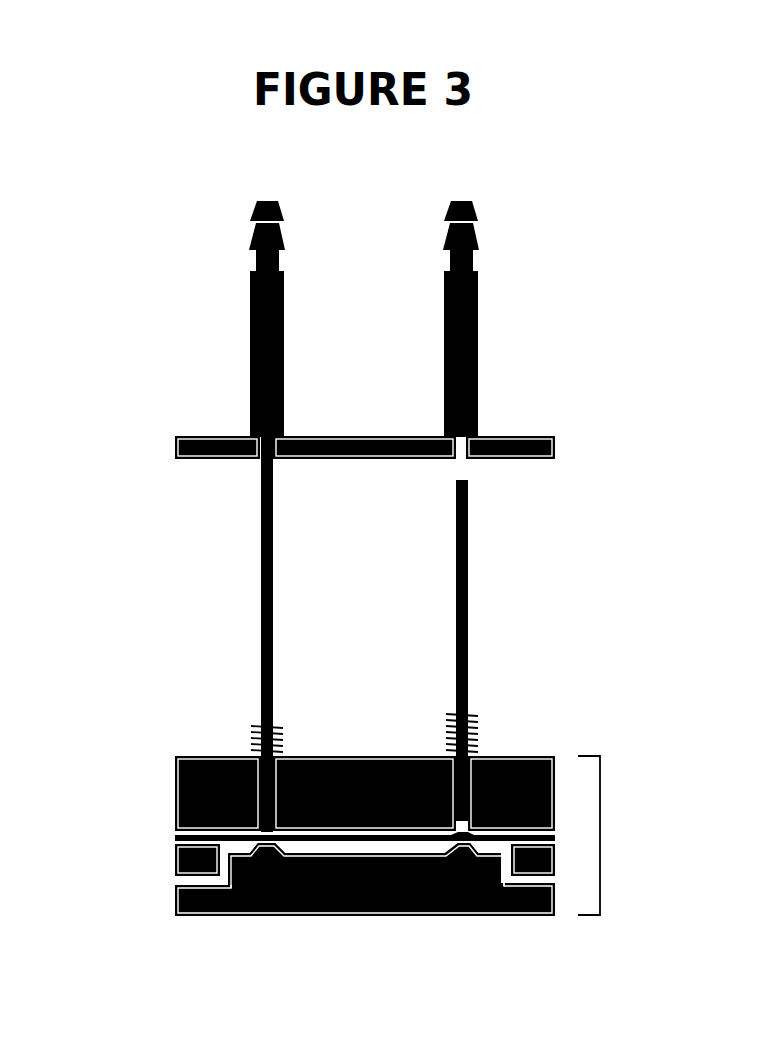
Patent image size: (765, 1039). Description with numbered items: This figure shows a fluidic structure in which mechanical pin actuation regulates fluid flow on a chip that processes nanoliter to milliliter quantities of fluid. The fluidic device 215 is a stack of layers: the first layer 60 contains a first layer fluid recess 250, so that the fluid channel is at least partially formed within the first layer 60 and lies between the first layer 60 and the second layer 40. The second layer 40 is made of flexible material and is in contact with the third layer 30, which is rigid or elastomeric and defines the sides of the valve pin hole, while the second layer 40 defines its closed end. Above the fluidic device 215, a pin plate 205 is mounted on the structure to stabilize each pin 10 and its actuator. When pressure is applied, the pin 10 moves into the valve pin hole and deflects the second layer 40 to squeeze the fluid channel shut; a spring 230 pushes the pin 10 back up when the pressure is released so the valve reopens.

The pin 10 is at (253, 609).
The pin plate 205 is at (185, 436).
The spring 230 is at (463, 722).
The first layer 60 is at (173, 770).
The second layer 40 is at (173, 847).
The first layer fluid recess 250 is at (215, 871).
The third layer 30 is at (470, 897).
The fluidic device 215 is at (624, 835).